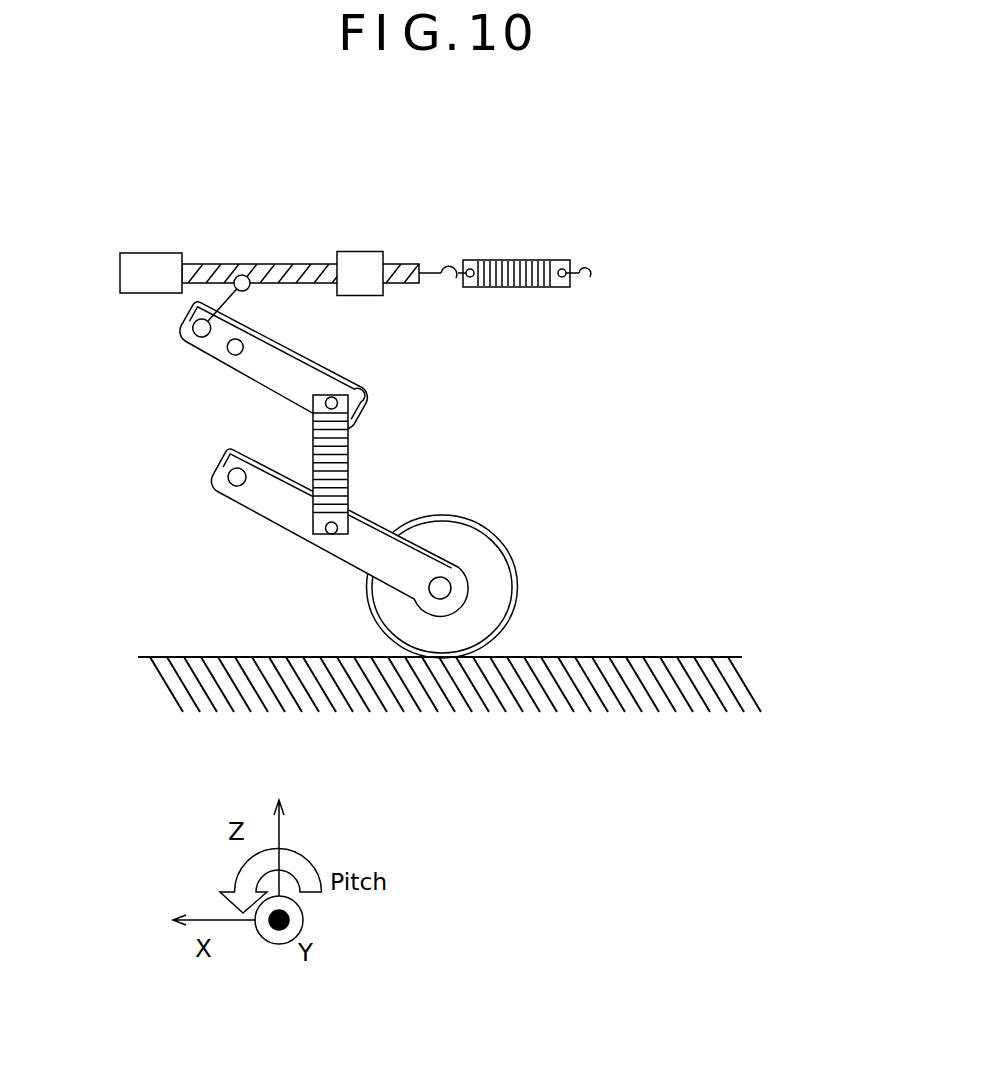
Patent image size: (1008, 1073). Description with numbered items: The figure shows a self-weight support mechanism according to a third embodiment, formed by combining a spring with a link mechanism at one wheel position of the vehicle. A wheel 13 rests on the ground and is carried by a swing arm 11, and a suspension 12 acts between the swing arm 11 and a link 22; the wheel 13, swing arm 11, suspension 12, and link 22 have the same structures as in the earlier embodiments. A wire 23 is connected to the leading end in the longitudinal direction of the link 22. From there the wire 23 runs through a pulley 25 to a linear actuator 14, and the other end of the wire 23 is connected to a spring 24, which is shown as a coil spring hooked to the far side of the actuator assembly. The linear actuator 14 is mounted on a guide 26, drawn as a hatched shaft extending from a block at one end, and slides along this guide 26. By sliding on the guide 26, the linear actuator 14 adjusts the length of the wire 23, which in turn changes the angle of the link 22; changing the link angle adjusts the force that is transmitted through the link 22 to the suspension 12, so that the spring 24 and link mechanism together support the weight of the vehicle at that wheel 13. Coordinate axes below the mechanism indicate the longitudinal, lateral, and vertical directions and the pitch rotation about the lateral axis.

The swing arm 11 is at (383, 526).
The suspension 12 is at (349, 461).
The wheel 13 is at (462, 518).
The linear actuator 14 is at (365, 251).
The link 22 is at (316, 361).
The wire 23 is at (226, 298).
The spring 24 is at (562, 260).
The pulley 25 is at (246, 275).
The guide 26 is at (198, 264).